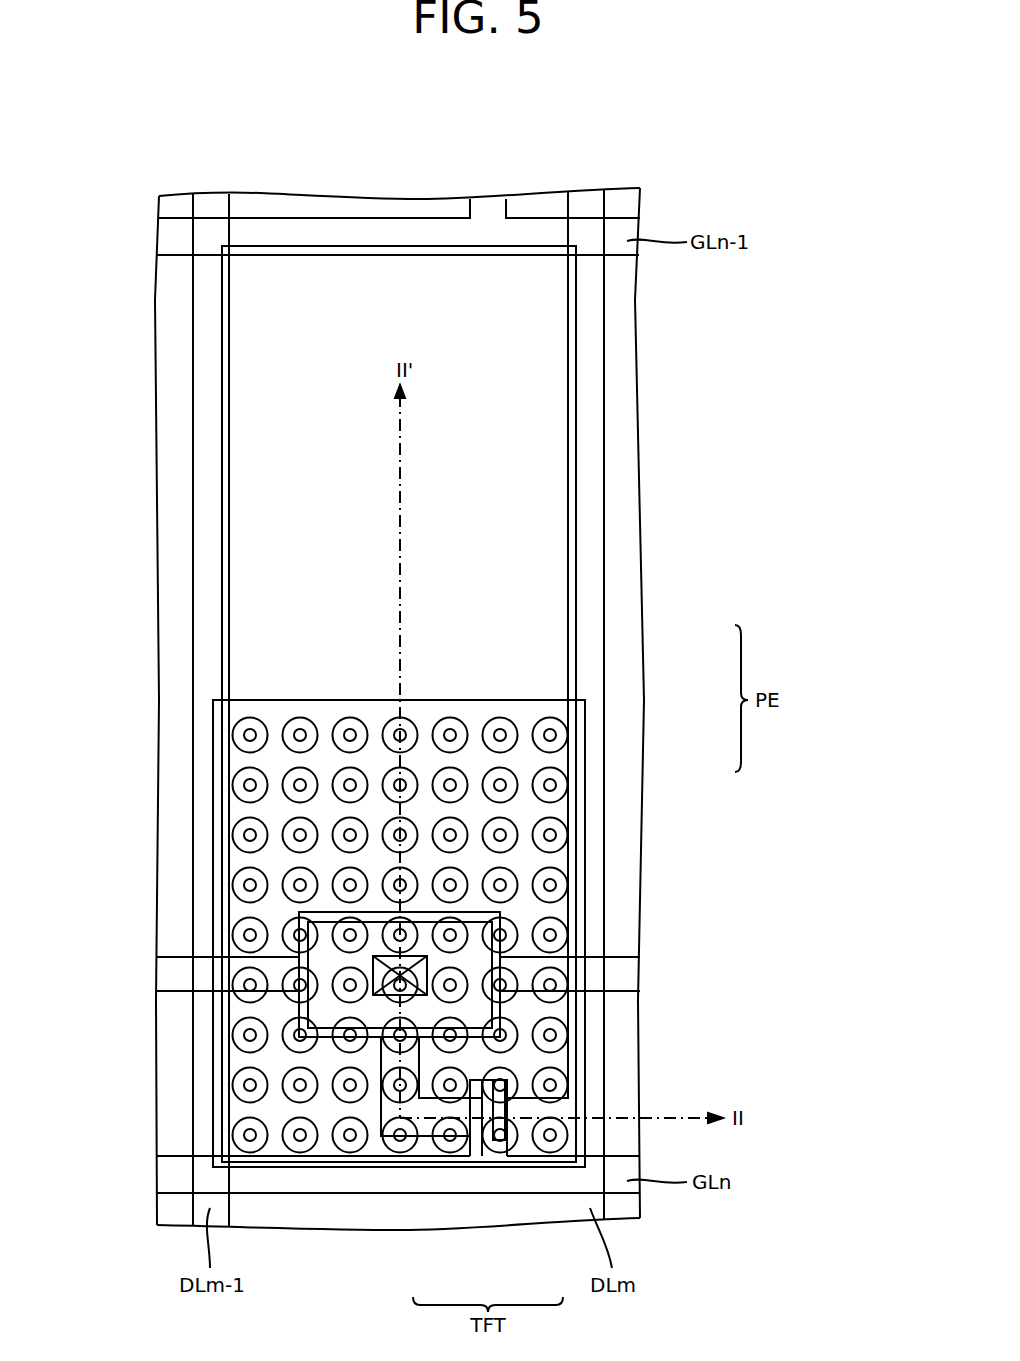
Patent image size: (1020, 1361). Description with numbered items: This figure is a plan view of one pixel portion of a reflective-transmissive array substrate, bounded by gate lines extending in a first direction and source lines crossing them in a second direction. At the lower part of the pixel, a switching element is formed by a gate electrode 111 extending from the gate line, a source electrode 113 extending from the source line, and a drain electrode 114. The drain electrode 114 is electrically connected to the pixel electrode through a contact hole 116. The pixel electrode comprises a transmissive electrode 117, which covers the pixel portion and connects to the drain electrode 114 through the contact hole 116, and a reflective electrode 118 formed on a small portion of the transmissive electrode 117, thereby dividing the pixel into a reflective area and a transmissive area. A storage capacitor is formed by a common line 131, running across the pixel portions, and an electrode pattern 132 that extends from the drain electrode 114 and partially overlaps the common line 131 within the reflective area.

The gate electrode 111 is at (477, 1150).
The source electrode 113 is at (523, 1128).
The drain electrode 114 is at (427, 1125).
The contact hole 116 is at (372, 967).
The transmissive electrode 117 is at (547, 638).
The reflective electrode 118 is at (530, 763).
The common line 131 is at (627, 975).
The electrode pattern 132 is at (476, 937).